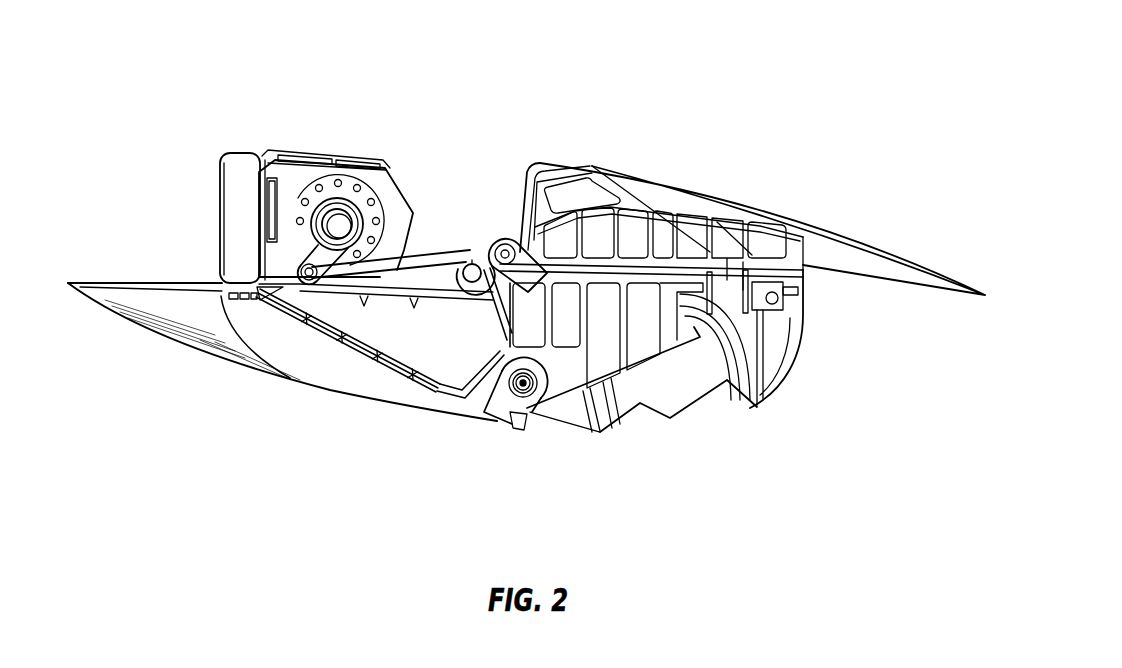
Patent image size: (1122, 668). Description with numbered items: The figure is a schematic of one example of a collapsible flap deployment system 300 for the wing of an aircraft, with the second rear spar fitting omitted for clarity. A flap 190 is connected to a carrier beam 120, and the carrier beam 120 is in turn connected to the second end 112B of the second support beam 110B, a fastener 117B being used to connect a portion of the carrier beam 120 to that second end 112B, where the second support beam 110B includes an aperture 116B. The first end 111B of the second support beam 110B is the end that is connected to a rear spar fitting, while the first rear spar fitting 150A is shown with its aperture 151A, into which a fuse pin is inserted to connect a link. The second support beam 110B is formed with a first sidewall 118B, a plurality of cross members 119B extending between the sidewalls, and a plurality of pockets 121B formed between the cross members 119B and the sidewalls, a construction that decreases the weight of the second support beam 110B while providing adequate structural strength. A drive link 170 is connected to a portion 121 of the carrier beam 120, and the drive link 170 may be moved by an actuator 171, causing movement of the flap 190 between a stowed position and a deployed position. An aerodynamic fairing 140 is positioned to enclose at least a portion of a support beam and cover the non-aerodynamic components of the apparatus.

The collapsible flap deployment system 300 is at (855, 45).
The aerodynamic fairing 140 is at (135, 308).
The first end of the second support beam 111B is at (247, 313).
The first rear spar fitting 150A is at (414, 240).
The actuator 171 is at (305, 264).
The drive link 170 is at (435, 254).
The aperture of the first rear spar fitting 151A is at (472, 262).
The portion of the carrier beam 121 is at (507, 248).
The flap 190 is at (907, 266).
The carrier beam 120 is at (563, 377).
The pockets 121B is at (377, 341).
The first sidewall 118B is at (330, 361).
The cross members 119B is at (426, 364).
The second support beam 110B is at (367, 387).
The aperture of the second support beam 116B is at (512, 386).
The second end of the second support beam 112B is at (510, 426).
The fastener 117B is at (527, 393).